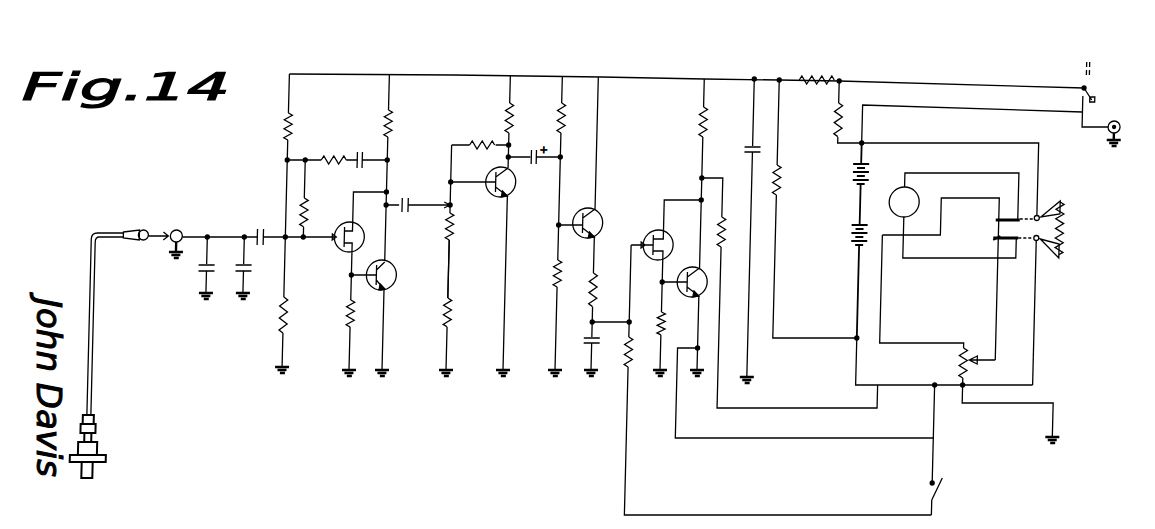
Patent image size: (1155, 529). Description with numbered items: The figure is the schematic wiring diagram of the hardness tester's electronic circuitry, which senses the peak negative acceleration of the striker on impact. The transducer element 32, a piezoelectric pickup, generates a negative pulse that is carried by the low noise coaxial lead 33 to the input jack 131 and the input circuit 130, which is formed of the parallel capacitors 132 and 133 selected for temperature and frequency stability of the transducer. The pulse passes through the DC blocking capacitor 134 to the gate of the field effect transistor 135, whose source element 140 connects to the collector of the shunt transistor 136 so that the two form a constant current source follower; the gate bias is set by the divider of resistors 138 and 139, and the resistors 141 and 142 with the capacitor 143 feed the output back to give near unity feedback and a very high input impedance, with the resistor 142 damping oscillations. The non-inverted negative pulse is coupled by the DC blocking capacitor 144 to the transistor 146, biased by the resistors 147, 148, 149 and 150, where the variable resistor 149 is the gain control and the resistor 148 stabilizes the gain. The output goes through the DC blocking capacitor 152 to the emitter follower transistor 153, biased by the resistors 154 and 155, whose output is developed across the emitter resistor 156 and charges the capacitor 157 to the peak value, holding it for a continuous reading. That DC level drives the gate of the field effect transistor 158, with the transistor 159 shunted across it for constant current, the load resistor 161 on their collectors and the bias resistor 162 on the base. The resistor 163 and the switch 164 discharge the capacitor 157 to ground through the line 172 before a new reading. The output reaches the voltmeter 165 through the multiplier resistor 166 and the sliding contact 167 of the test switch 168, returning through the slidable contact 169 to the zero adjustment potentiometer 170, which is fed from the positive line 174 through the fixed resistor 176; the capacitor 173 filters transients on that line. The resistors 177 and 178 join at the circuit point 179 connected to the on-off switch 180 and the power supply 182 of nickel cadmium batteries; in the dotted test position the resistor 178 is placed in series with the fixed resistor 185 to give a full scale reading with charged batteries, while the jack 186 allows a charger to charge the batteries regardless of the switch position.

The transducer element 32 is at (104, 450).
The lead 33 is at (101, 366).
The input circuit 130 is at (232, 222).
The input jack 131 is at (188, 214).
The capacitor 132 is at (208, 270).
The capacitor 133 is at (252, 275).
The DC blocking capacitor 134 is at (278, 214).
The field effect transistor 135 is at (342, 251).
The transistor 136 is at (412, 258).
The resistor 138 is at (284, 333).
The resistor 139 is at (284, 127).
The source element 140 is at (358, 224).
The resistor 141 is at (307, 212).
The resistor 142 is at (340, 141).
The capacitor 143 is at (361, 151).
The DC blocking capacitor 144 is at (403, 212).
The transistor 146 is at (456, 213).
The resistor 147 is at (506, 110).
The resistor 148 is at (479, 142).
The variable resistor 149 is at (454, 232).
The resistor 150 is at (476, 312).
The DC blocking capacitor 152 is at (514, 188).
The transistor 153 is at (599, 217).
The resistor 154 is at (559, 110).
The resistor 155 is at (558, 272).
The emitter resistor 156 is at (597, 292).
The capacitor 157 is at (590, 348).
The field effect transistor 158 is at (653, 232).
The transistor 159 is at (711, 284).
The load resistor 161 is at (700, 120).
The bias resistor 162 is at (662, 332).
The resistor 163 is at (630, 358).
The switch 164 is at (953, 487).
The voltmeter 165 is at (916, 197).
The multiplier resistor 166 is at (726, 232).
The sliding contact 167 is at (997, 221).
The test switch 168 is at (990, 243).
The slidable contact 169 is at (1002, 244).
The zero adjustment potentiometer 170 is at (963, 365).
The line 172 is at (880, 446).
The capacitor 173 is at (750, 145).
The positive line 174 is at (732, 78).
The fixed resistor 176 is at (781, 190).
The resistor 177 is at (827, 60).
The resistor 178 is at (835, 120).
The circuit point 179 is at (841, 80).
The on-off switch 180 is at (1095, 97).
The power supply 182 is at (852, 236).
The fixed resistor 185 is at (1066, 233).
The jack 186 is at (1123, 132).